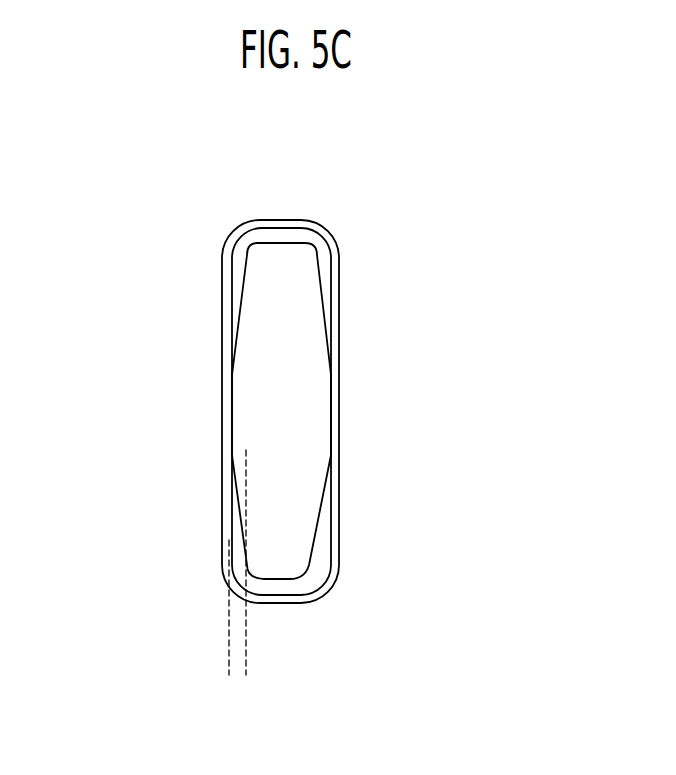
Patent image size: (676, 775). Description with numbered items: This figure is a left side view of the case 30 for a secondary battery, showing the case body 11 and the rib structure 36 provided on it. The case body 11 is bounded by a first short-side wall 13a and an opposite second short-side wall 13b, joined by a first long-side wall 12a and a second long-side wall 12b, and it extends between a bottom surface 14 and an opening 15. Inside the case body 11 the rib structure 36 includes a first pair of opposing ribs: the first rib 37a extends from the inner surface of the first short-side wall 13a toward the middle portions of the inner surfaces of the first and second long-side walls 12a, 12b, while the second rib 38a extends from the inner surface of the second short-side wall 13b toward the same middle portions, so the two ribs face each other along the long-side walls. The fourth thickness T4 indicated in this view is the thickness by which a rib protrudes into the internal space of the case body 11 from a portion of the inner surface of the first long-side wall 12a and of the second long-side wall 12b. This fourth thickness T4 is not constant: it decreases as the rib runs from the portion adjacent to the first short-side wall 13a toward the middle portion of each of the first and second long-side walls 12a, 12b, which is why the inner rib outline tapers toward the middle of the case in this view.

The case for secondary battery 30 is at (166, 194).
The case body 11 is at (355, 308).
The rib structure 36 is at (330, 252).
The 1A-th rib 37a is at (242, 268).
The 2A-th rib 38a is at (240, 542).
The opening 15 is at (232, 403).
The first short-side wall 13a is at (280, 220).
The second short-side wall 13b is at (278, 603).
The first long-side wall 12a is at (227, 457).
The second long-side wall 12b is at (333, 545).
The bottom surface 14 is at (298, 495).
The fourth thickness T4 is at (275, 651).